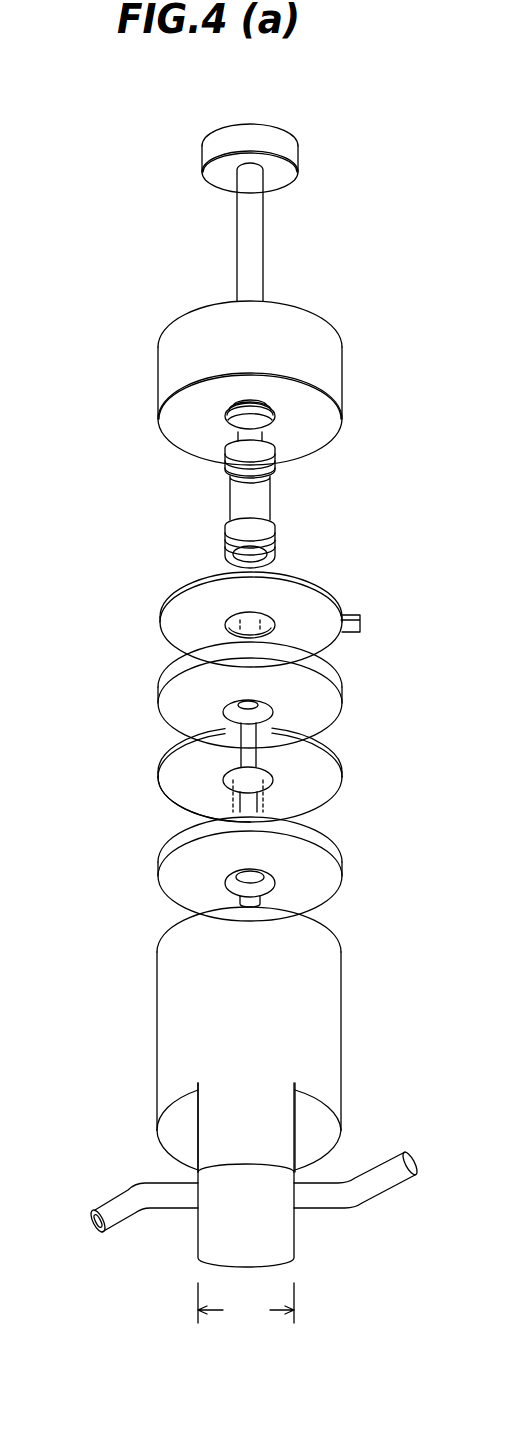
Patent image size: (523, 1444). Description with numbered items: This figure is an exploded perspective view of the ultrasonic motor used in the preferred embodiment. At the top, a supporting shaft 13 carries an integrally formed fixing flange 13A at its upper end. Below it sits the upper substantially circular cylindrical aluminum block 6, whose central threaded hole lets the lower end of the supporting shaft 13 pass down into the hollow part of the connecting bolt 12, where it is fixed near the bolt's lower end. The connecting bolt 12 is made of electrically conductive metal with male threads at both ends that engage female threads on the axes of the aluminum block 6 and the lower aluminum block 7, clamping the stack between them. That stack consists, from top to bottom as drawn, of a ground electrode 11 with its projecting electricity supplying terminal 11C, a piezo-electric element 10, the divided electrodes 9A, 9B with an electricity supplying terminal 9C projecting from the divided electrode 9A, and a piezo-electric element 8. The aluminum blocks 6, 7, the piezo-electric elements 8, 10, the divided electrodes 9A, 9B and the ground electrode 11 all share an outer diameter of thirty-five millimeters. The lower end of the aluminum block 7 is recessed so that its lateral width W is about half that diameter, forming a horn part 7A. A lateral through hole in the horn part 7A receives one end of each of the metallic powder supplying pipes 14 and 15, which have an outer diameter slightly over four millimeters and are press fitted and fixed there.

The fixing flange 13A is at (300, 150).
The supporting shaft 13 is at (263, 245).
The aluminum block 6 is at (338, 370).
The connecting bolt 12 is at (270, 500).
The ground electrode 11 is at (343, 578).
The electricity supplying terminal 11C is at (360, 626).
The piezo-electric element 10 is at (343, 682).
The electricity supplying terminal 9C is at (270, 725).
The divided electrode 9A is at (343, 783).
The divided electrode 9B is at (157, 779).
The piezo-electric element 8 is at (343, 870).
The aluminum block 7 is at (340, 1020).
The horn part 7A is at (296, 1133).
The metallic powder supplying pipe 14 is at (380, 1196).
The metallic powder supplying pipe 15 is at (122, 1228).
The width of the horn part W is at (246, 1304).